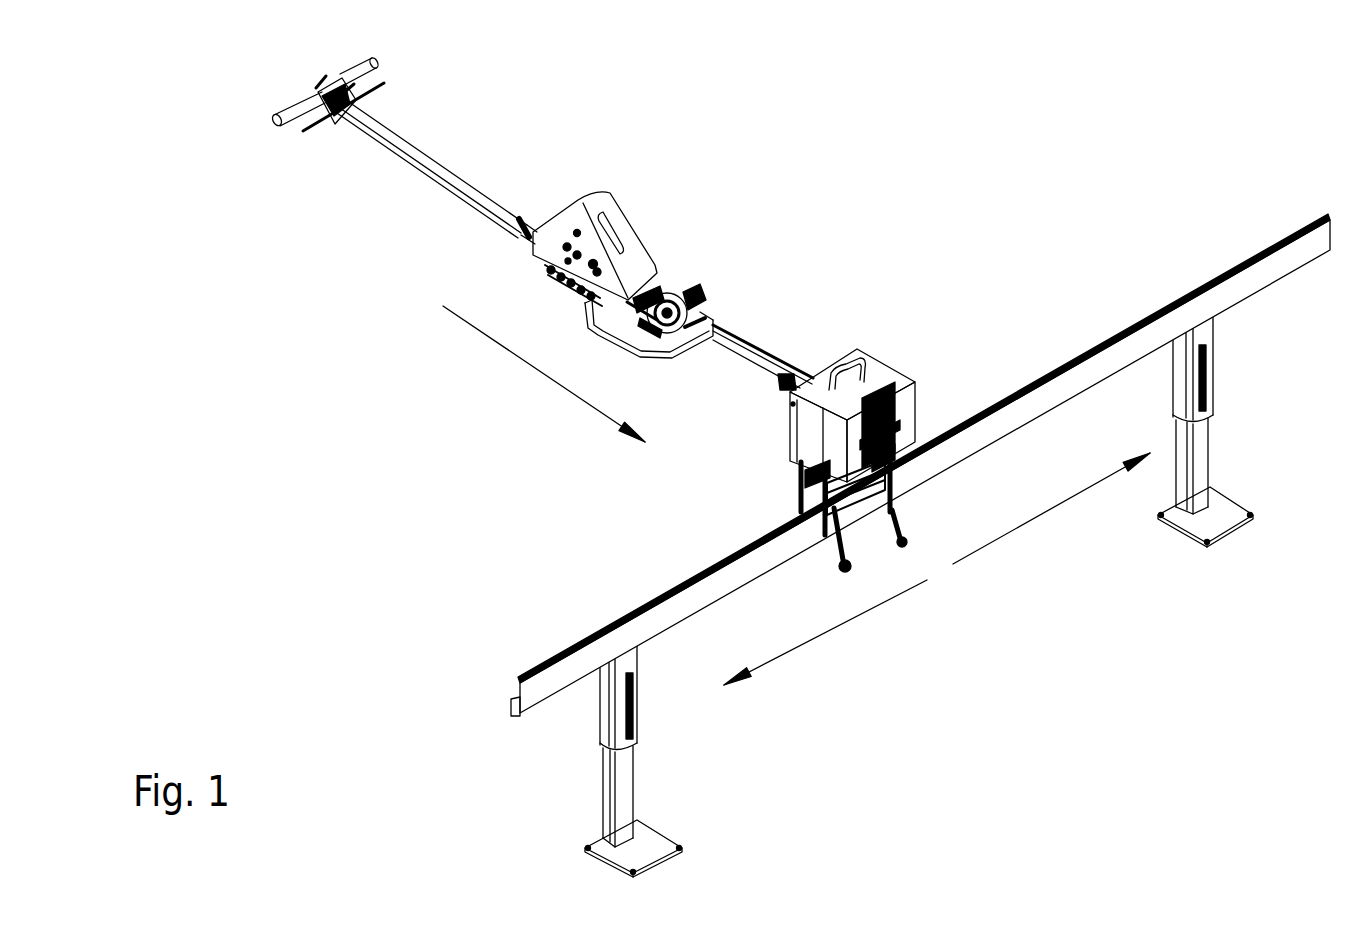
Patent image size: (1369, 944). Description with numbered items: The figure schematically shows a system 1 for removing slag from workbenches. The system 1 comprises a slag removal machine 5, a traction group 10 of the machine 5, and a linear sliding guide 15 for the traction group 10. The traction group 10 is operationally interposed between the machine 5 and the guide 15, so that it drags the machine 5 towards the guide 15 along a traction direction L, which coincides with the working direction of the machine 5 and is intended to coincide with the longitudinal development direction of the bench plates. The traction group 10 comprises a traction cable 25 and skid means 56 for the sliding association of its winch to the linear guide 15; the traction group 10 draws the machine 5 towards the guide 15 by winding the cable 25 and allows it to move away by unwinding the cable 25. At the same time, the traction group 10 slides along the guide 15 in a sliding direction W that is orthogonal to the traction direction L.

The system 1 is at (921, 158).
The slag removal machine 5 is at (618, 202).
The traction group 10 is at (885, 355).
The linear sliding guide 15 is at (1062, 366).
The traction cable 25 is at (743, 362).
The skid means 56 is at (802, 510).
The traction direction L is at (534, 364).
The sliding direction W is at (937, 569).